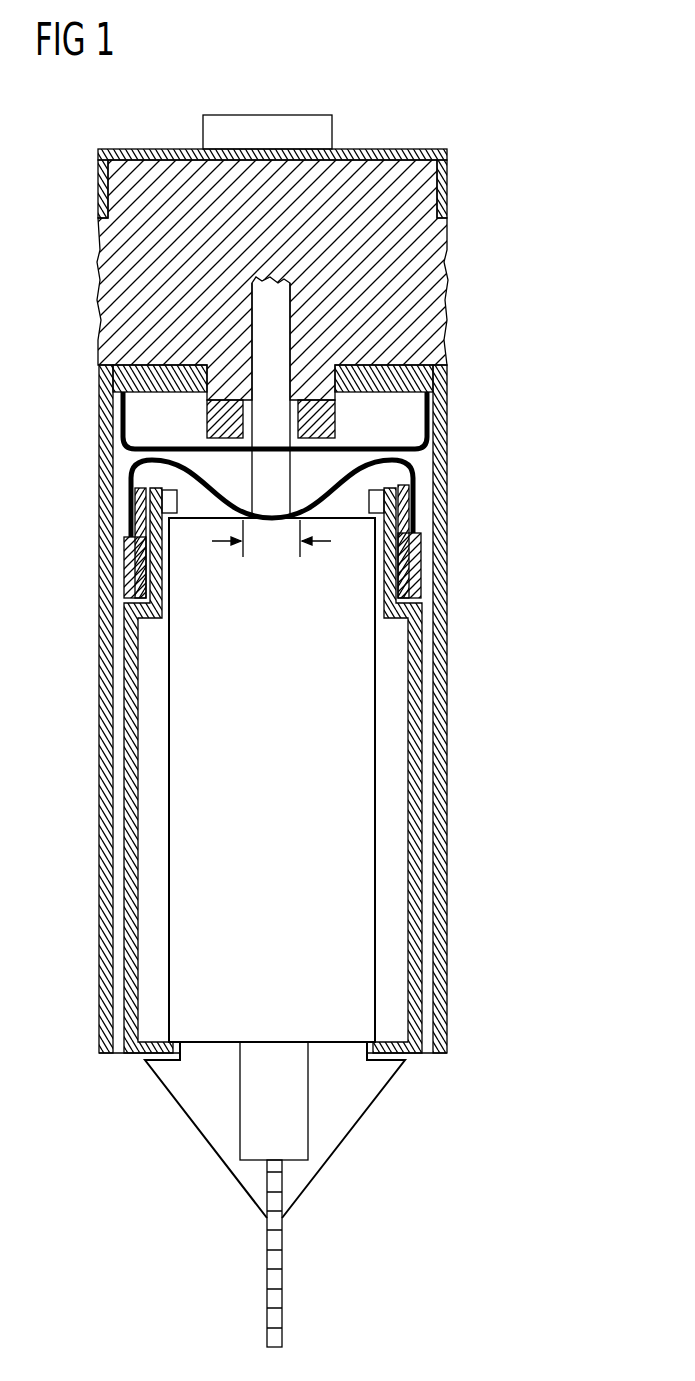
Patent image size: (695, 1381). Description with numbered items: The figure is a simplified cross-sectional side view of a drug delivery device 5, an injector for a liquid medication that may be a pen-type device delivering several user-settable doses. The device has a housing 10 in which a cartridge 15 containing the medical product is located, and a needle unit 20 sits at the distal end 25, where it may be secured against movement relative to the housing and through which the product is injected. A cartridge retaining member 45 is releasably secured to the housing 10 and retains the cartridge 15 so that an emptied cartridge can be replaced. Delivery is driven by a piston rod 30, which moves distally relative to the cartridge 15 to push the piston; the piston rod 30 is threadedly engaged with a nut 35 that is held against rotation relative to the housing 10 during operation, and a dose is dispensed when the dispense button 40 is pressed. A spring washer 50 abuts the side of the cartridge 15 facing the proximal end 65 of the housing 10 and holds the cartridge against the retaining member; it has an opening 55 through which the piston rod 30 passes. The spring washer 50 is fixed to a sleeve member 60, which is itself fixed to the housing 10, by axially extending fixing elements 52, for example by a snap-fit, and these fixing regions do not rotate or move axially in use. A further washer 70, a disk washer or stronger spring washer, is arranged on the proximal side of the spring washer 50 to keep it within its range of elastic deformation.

The drug delivery device 5 is at (517, 668).
The housing 10 is at (106, 770).
The cartridge 15 is at (360, 995).
The needle unit 20 is at (330, 1182).
The distal end 25 is at (257, 1325).
The piston rod 30 is at (278, 338).
The nut 35 is at (212, 422).
The dispense button 40 is at (323, 132).
The cartridge retaining member 45 is at (417, 922).
The spring washer 50 is at (333, 490).
The fixing elements 52 is at (132, 500).
The opening 55 is at (271, 541).
The sleeve member 60 is at (138, 573).
The proximal end 65 is at (187, 124).
The further washer 70 is at (122, 417).